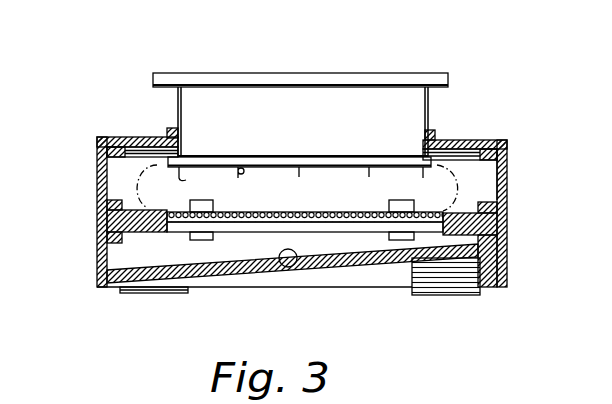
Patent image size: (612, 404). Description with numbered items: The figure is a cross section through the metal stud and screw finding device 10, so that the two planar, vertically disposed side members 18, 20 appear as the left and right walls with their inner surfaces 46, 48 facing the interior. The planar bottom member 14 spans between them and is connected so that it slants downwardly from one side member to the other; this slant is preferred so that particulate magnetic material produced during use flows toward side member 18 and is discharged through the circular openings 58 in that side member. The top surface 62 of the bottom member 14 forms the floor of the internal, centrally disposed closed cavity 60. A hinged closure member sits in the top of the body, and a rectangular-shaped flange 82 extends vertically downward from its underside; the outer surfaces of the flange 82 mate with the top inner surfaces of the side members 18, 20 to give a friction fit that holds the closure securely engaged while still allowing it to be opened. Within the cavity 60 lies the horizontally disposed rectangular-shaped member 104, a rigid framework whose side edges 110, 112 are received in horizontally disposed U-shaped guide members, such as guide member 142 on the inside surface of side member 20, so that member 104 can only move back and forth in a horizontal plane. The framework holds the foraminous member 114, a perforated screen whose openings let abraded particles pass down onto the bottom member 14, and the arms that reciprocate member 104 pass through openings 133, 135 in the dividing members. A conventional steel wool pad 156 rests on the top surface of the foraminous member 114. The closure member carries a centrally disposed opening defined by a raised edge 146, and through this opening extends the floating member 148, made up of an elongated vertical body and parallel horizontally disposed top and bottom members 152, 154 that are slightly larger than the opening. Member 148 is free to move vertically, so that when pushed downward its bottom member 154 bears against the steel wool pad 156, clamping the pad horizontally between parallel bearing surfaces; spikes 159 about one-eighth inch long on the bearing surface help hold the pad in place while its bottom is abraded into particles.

The metal stud and screw finding device 10 is at (336, 57).
The bottom member 14 is at (265, 272).
The side member 18 is at (97, 160).
The side member 20 is at (509, 156).
The inner surface 46 is at (100, 195).
The inner surface 48 is at (509, 174).
The openings 58 is at (100, 268).
The internal cavity 60 is at (127, 166).
The top surface 62 is at (290, 268).
The flange 82 is at (110, 137).
The rectangular-shaped member 104 is at (508, 283).
The side edge 110 is at (100, 222).
The side edge 112 is at (508, 232).
The foraminous member 114 is at (268, 212).
The opening 133 is at (207, 210).
The opening 135 is at (413, 192).
The U-shaped guide member 142 is at (506, 207).
The raised edge 146 is at (434, 137).
The floating member 148 is at (401, 77).
The top member 152 is at (199, 72).
The bottom member 154 is at (341, 160).
The steel wool pad 156 is at (283, 188).
The spikes 159 is at (240, 168).